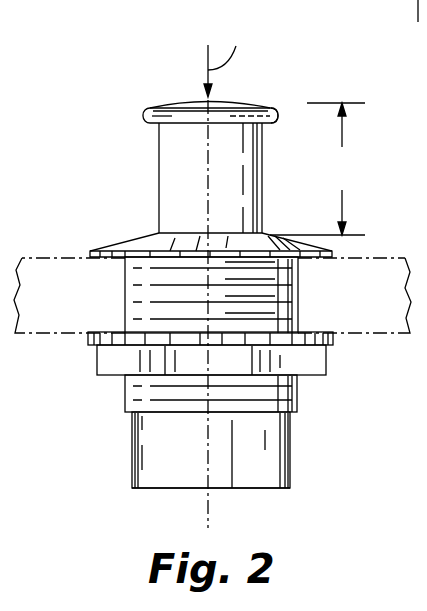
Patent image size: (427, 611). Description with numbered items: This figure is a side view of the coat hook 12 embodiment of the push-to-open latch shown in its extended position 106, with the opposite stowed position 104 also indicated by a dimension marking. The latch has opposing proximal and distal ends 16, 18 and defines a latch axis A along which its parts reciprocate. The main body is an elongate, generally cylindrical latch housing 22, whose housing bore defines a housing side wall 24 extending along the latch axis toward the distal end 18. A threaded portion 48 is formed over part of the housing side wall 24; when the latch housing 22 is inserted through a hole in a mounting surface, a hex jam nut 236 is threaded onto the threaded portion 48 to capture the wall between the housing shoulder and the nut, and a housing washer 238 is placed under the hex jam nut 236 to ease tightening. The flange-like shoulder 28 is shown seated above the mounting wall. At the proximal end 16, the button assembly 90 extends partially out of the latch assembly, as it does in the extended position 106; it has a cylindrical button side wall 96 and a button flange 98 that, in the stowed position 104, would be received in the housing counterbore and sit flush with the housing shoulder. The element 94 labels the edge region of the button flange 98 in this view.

The coat hook 12 is at (95, 44).
The proximal end 16 is at (150, 116).
The distal end 18 is at (132, 473).
The latch housing 22 is at (132, 426).
The housing side wall 24 is at (240, 435).
The flange 28 is at (121, 241).
The threaded portion 48 is at (296, 392).
The button assembly 90 is at (191, 106).
The side wall of cap 94 is at (282, 111).
The button side wall 96 is at (160, 152).
The button flange 98 is at (166, 109).
The stowed position 104 is at (356, 234).
The extended position 106 is at (352, 104).
The hex jam nut 236 is at (97, 368).
The housing washer 238 is at (88, 339).